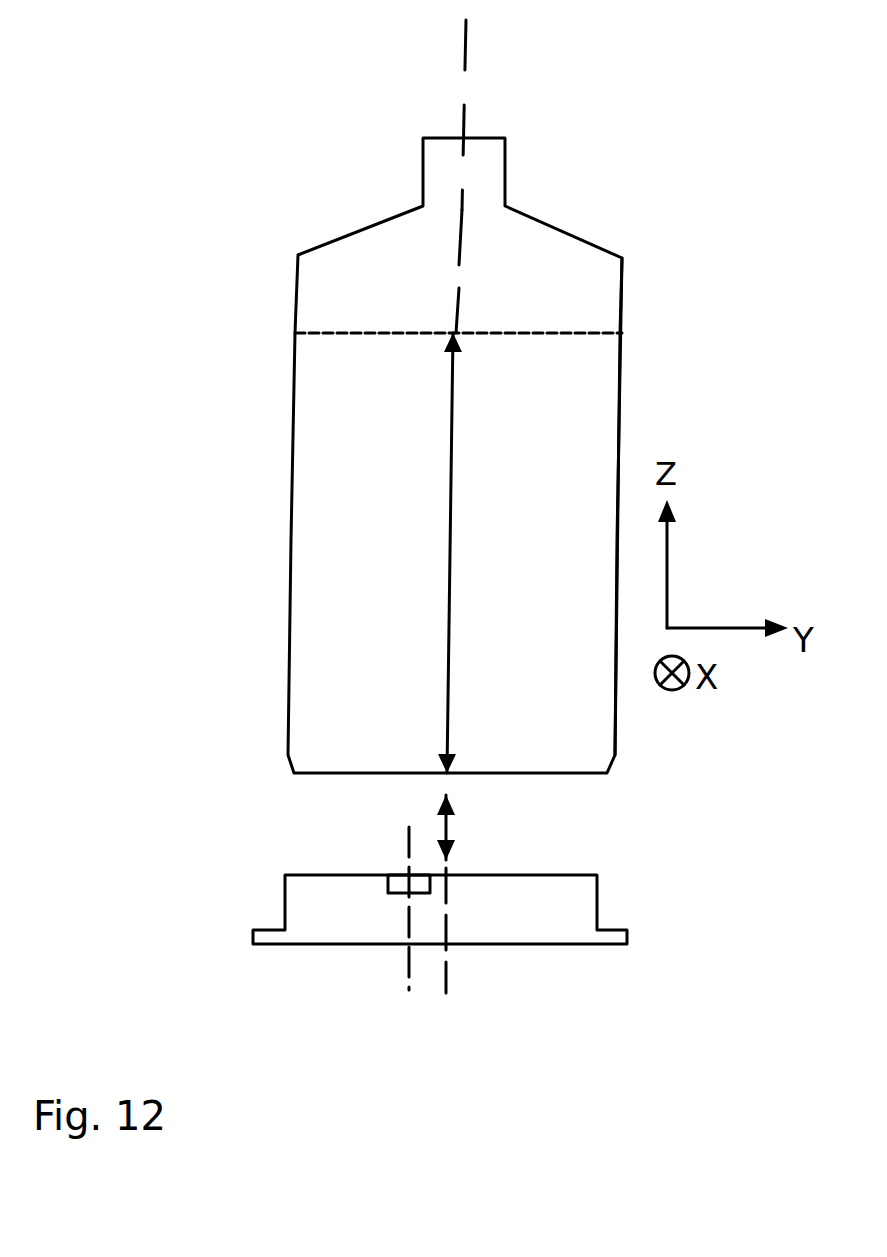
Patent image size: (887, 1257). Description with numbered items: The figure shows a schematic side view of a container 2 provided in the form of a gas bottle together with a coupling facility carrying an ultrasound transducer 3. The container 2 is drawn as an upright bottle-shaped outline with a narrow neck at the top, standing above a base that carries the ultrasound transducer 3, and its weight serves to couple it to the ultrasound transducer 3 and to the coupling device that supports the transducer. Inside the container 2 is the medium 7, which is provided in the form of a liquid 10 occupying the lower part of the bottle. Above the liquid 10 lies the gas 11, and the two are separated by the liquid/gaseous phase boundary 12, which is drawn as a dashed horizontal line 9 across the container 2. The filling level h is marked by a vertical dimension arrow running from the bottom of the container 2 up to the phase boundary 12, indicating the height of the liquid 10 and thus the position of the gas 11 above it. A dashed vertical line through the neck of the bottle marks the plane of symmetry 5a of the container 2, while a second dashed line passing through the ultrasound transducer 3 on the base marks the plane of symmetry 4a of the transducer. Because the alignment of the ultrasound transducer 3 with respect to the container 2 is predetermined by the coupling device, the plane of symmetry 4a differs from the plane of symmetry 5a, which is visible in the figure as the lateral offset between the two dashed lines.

The container 2 is at (560, 230).
The plane of symmetry of the container 5a is at (466, 40).
The gas 11 is at (612, 277).
The fill level 9 is at (526, 327).
The medium 7 is at (666, 544).
The liquid 10 is at (608, 382).
The liquid/gaseous phase boundary 12 is at (482, 553).
The filling level h is at (482, 553).
The plane of symmetry of the ultrasound transducer 4a is at (407, 832).
The ultrasound transducer 3 is at (386, 888).